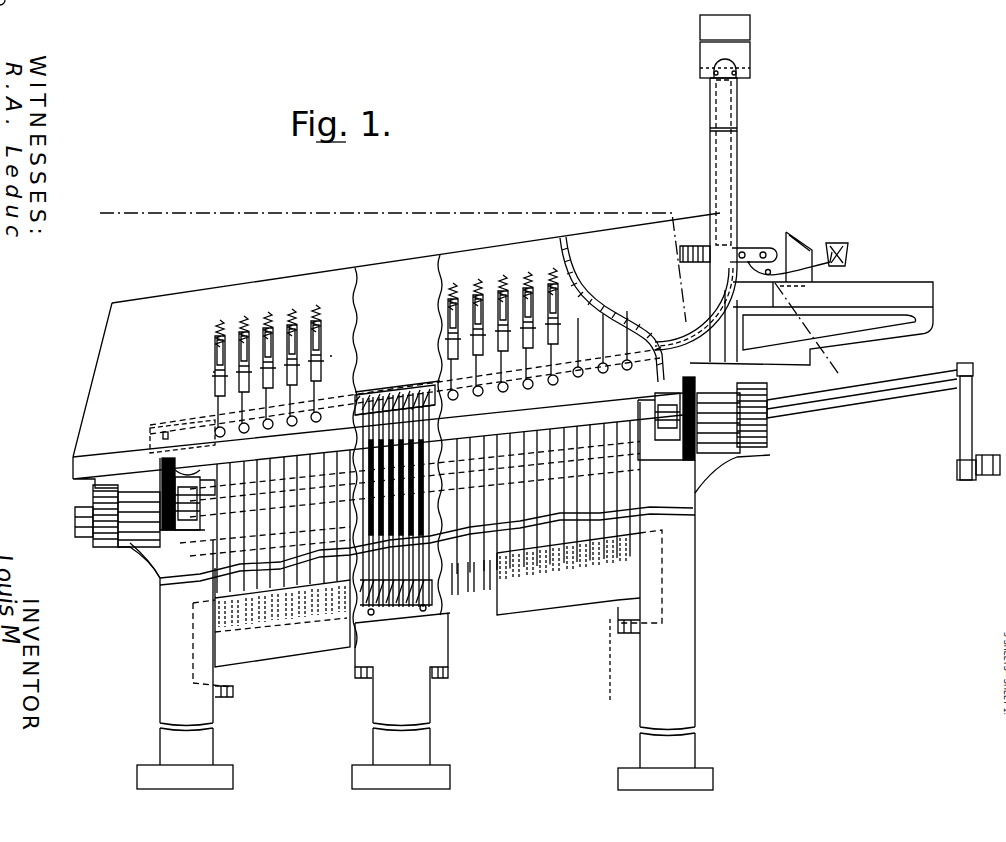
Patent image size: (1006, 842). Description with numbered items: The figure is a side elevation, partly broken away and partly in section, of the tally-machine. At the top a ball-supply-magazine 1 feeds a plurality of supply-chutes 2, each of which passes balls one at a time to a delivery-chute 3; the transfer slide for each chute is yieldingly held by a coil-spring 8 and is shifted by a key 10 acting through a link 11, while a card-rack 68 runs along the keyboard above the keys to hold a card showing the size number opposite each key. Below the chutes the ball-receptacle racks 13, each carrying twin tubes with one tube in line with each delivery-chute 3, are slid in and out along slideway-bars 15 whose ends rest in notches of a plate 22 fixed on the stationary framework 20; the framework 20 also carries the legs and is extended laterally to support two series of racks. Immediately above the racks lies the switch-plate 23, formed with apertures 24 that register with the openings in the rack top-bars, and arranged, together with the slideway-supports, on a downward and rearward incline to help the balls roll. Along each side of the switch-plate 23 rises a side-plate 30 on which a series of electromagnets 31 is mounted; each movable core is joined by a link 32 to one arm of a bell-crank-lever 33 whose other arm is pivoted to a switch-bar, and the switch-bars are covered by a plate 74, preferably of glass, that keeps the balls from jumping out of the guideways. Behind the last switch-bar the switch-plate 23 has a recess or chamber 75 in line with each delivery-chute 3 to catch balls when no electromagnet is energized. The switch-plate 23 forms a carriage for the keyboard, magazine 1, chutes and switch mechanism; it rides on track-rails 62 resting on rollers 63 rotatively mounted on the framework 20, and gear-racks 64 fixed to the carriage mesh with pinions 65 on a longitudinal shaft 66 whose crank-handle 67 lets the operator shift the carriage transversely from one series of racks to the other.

The ball-supply-magazine 1 is at (750, 28).
The supply-chute 2 is at (710, 149).
The delivery-chute 3 is at (460, 297).
The coil-spring 8 is at (693, 258).
The key 10 is at (848, 246).
The link 11 is at (755, 250).
The ball-receptacle rack 13 is at (528, 432).
The slideway-bars 15 is at (450, 575).
The framework 20 is at (205, 748).
The plate 22 is at (399, 613).
The switch-plate 23 is at (73, 470).
The apertures 24 is at (430, 412).
The side-plates 30 is at (115, 345).
The electromagnets 31 is at (292, 318).
The link 32 is at (215, 381).
The bell-crank-lever 33 is at (218, 404).
The track-rails 62 is at (190, 470).
The rollers 63 is at (185, 535).
The gear-racks 64 is at (80, 488).
The pinions 65 is at (108, 550).
The shaft 66 is at (885, 398).
The crank-handle 67 is at (988, 478).
The card-rack 68 is at (812, 249).
The plate 74 is at (393, 392).
The recess or chamber 75 is at (178, 420).